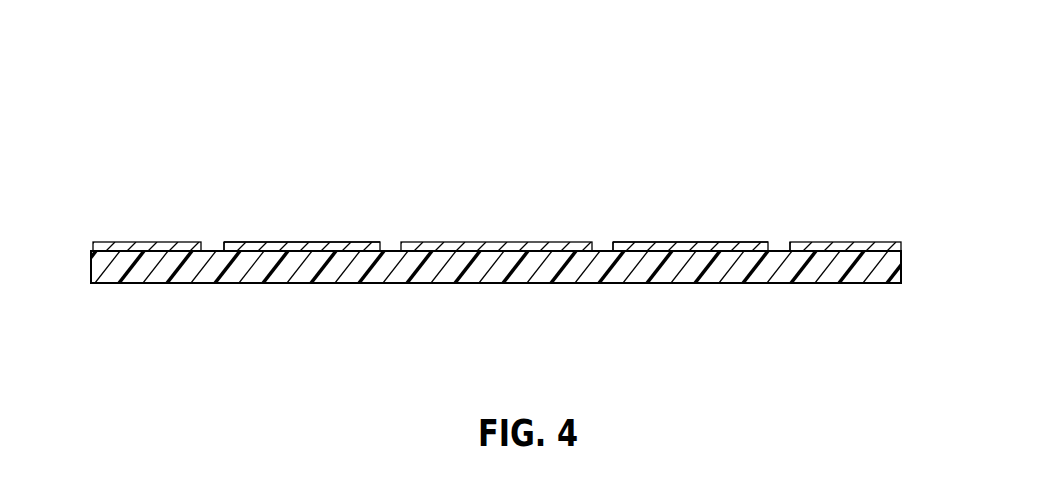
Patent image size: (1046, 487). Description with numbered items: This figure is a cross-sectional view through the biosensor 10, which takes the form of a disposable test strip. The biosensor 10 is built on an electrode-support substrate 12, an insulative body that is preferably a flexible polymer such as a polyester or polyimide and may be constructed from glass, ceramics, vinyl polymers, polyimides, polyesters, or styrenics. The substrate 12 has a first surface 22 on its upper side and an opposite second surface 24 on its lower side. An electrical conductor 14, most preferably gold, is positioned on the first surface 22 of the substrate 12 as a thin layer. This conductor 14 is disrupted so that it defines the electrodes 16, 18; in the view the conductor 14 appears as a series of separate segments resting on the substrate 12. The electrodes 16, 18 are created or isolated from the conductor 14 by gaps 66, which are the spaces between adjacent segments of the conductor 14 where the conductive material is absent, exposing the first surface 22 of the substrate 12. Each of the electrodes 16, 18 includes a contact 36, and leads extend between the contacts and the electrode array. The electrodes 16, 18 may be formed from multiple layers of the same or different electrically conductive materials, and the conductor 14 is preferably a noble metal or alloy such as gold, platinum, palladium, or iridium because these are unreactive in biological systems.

The biosensor 10 is at (506, 222).
The electrode-support substrate 12 is at (867, 286).
The electrical conductor 14 is at (143, 243).
The electrode 16 is at (312, 249).
The electrode 18 is at (717, 247).
The first surface 22 is at (780, 249).
The second surface 24 is at (702, 285).
The contact 36 is at (255, 243).
The gaps 66 is at (212, 243).